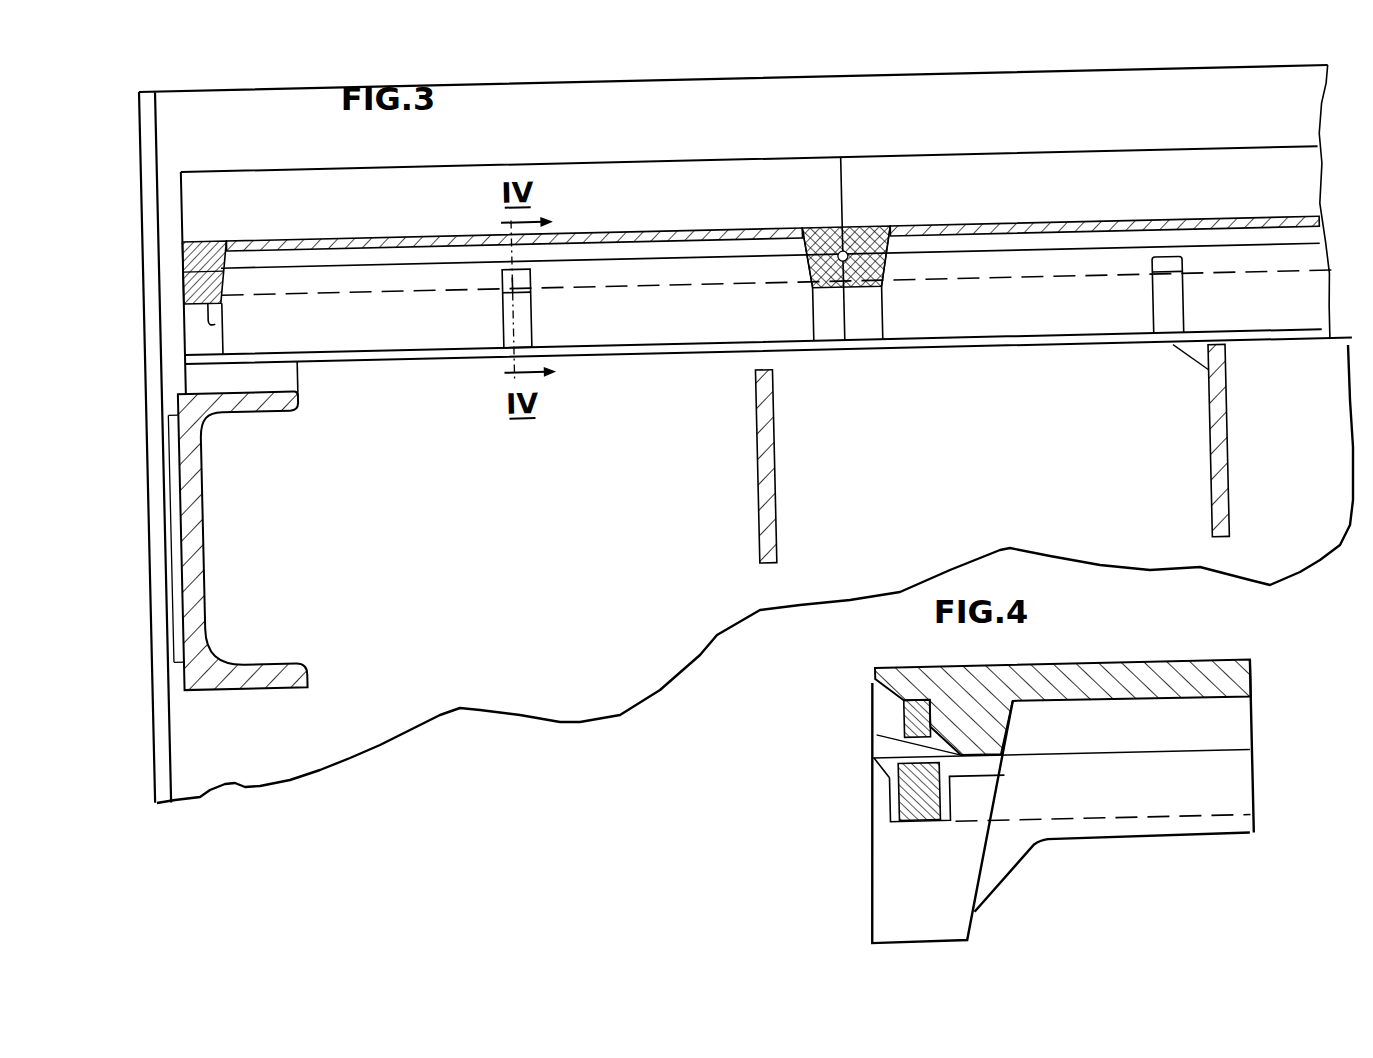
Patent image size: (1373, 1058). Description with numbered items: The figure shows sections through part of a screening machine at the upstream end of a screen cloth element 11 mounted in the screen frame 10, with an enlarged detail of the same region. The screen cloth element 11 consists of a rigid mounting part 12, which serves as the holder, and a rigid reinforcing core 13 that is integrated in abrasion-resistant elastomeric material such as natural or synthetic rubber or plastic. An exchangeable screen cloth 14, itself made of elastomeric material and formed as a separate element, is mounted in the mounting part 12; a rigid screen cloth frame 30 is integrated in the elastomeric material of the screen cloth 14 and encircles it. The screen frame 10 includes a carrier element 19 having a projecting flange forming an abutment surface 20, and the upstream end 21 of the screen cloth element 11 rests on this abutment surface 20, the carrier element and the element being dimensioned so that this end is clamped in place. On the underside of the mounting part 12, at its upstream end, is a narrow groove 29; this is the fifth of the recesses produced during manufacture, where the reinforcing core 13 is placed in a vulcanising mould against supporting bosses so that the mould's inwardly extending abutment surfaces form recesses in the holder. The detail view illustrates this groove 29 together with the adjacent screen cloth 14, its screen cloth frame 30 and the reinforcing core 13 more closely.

In FIG. 3, the screen frame 10 is at (156, 142).
In FIG. 3, the screen cloth element 11 is at (869, 165).
In FIG. 3, the mounting part 12 is at (789, 294).
In FIG. 3, the reinforcing core 13 is at (210, 326).
In FIG. 4, the reinforcing core 13 is at (905, 797).
In FIG. 3, the screen cloth 14 is at (682, 246).
In FIG. 4, the screen cloth 14 is at (1142, 680).
In FIG. 3, the carrier element 19 is at (988, 379).
In FIG. 3, the abutment surface 20 is at (849, 366).
In FIG. 3, the upstream end 21 is at (1070, 331).
In FIG. 3, the narrow groove 29 is at (520, 321).
In FIG. 4, the narrow groove 29 is at (893, 872).
In FIG. 3, the screen cloth frame 30 is at (204, 243).
In FIG. 4, the screen cloth frame 30 is at (889, 716).